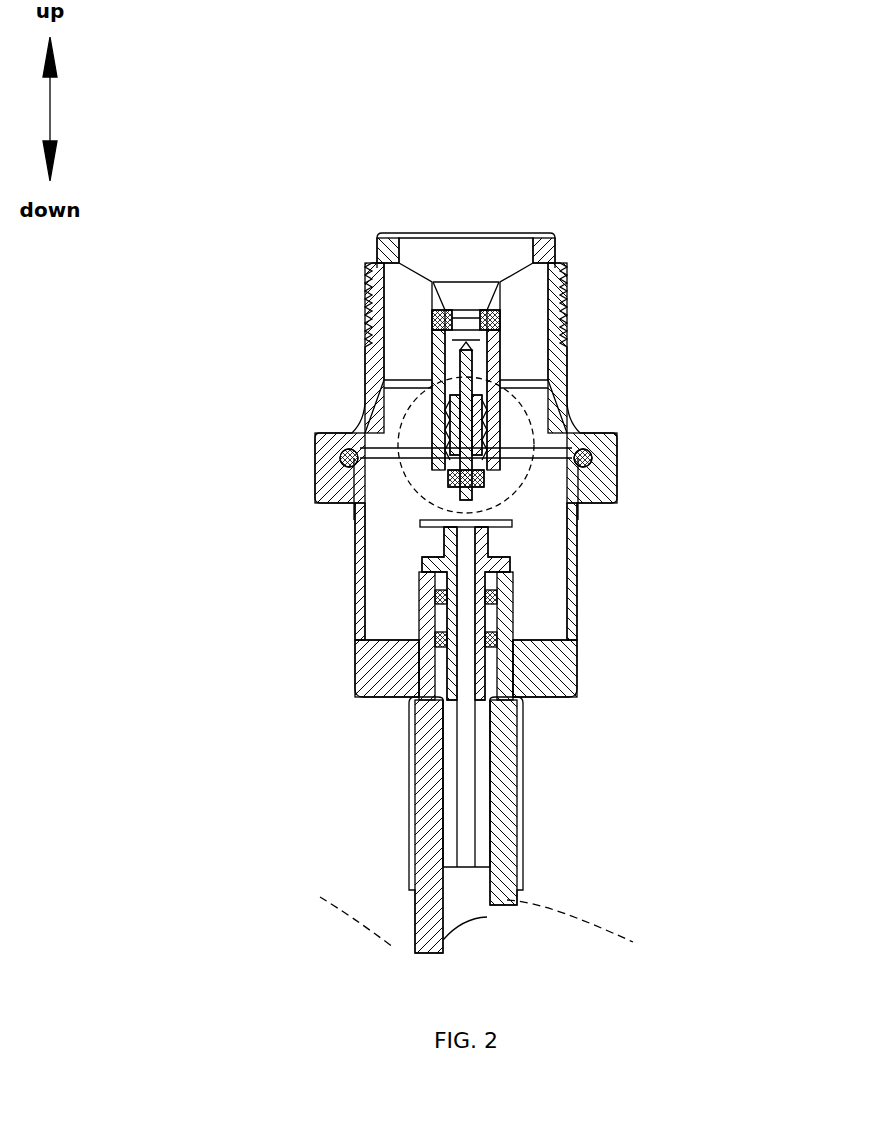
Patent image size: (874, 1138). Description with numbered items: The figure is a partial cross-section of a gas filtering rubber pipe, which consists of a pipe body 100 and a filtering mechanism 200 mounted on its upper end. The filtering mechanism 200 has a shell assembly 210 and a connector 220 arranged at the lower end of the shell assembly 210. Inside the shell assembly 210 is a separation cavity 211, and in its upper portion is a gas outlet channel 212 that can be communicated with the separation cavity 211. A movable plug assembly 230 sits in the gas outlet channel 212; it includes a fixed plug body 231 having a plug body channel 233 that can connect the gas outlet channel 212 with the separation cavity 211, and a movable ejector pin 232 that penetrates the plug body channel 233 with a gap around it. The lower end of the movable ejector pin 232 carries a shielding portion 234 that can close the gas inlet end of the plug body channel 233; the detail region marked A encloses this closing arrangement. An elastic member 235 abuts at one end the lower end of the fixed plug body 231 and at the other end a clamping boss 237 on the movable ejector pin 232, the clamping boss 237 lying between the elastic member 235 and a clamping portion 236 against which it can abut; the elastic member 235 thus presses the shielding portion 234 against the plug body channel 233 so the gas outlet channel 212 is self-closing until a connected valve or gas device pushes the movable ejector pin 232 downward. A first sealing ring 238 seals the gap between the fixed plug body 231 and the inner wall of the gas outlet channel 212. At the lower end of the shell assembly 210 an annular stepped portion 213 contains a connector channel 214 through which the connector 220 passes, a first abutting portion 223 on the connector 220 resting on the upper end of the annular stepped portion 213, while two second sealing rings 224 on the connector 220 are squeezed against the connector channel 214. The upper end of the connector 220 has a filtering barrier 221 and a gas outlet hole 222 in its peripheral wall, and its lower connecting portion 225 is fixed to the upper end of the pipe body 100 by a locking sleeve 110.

The pipe body 100 is at (410, 900).
The locking sleeve 110 is at (523, 790).
The filtering mechanism 200 is at (594, 255).
The shell assembly 210 is at (340, 433).
The separation cavity 211 is at (425, 528).
The gas outlet channel 212 is at (468, 300).
The annular stepped portion 213 is at (432, 610).
The connector channel 214 is at (500, 655).
The connector 220 is at (508, 700).
The filtering barrier 221 is at (452, 560).
The gas outlet hole 222 is at (495, 548).
The first abutting portion 223 is at (440, 590).
The second sealing ring 224 is at (505, 626).
The connecting portion 225 is at (417, 760).
The movable plug assembly 230 is at (482, 366).
The fixed plug body 231 is at (476, 455).
The movable ejector pin 232 is at (433, 370).
The plug body channel 233 is at (478, 425).
The shielding portion 234 is at (478, 484).
The elastic member 235 is at (487, 400).
The clamping portion 236 is at (433, 385).
The clamping boss 237 is at (440, 400).
The first sealing ring 238 is at (392, 496).
The region A is at (450, 425).